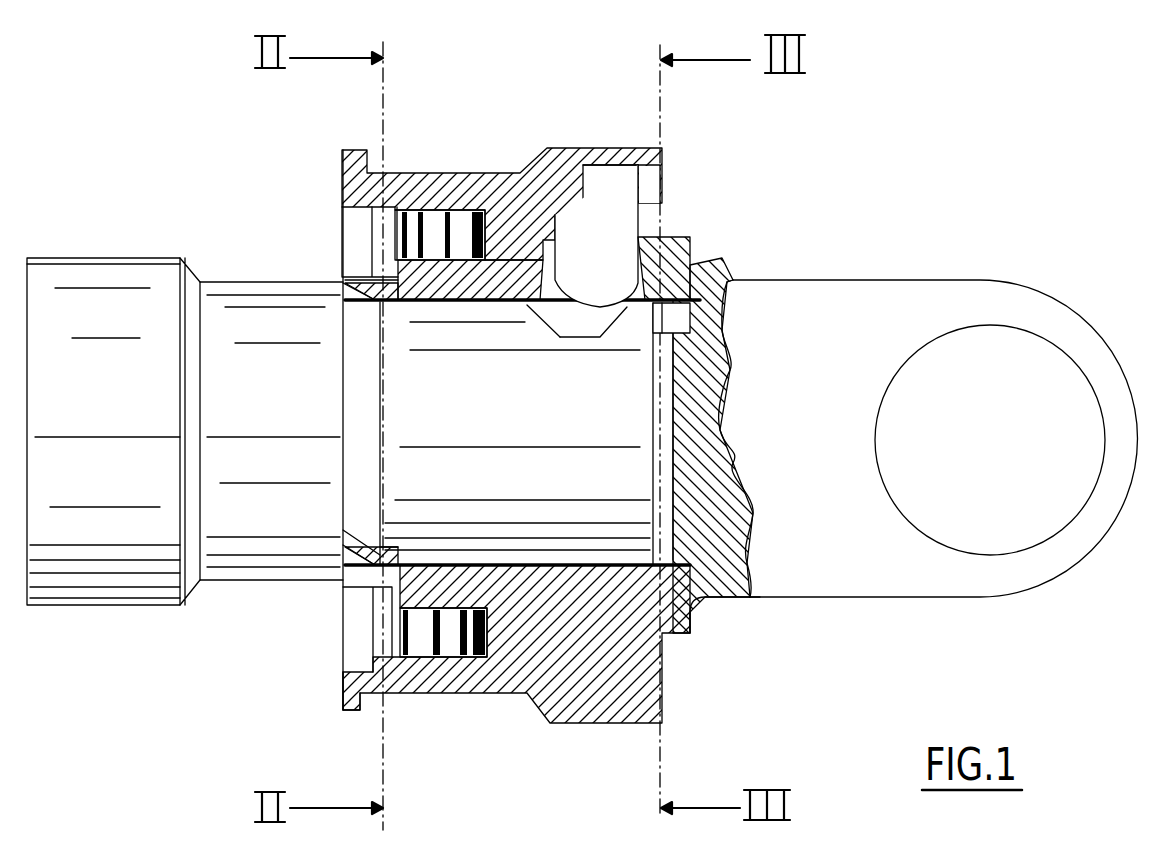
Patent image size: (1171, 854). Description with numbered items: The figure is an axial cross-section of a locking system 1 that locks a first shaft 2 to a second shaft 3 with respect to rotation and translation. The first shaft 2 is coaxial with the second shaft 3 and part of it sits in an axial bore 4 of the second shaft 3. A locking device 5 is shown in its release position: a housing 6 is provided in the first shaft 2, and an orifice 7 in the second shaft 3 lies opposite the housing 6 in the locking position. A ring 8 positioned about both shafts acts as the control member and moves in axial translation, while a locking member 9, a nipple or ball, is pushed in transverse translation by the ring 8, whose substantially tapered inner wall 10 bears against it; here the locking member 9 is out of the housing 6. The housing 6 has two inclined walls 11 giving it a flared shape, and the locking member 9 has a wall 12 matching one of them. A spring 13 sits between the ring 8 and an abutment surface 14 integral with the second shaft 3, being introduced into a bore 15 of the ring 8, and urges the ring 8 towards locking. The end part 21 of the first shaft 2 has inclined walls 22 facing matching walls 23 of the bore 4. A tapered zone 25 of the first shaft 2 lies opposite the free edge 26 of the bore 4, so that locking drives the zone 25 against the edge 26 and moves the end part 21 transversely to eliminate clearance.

The locking system 1 is at (330, 599).
The first shaft 2 is at (150, 533).
The second shaft 3 is at (860, 440).
The axial bore 4 is at (383, 632).
The locking device 5 is at (477, 399).
The housing 6 is at (560, 335).
The orifice 7 is at (530, 237).
The ring 8 is at (405, 175).
The locking member 9 is at (618, 227).
The inner wall 10 is at (610, 152).
The inclined walls 11 is at (533, 313).
The wall 12 is at (640, 330).
The spring 13 is at (485, 238).
The abutment surface 14 is at (367, 633).
The bore 15 is at (422, 637).
The end part 21 is at (677, 637).
The inclined walls 22 is at (800, 476).
The matching walls 23 is at (737, 600).
The tapered zone 25 is at (347, 537).
The free edge 26 is at (347, 303).